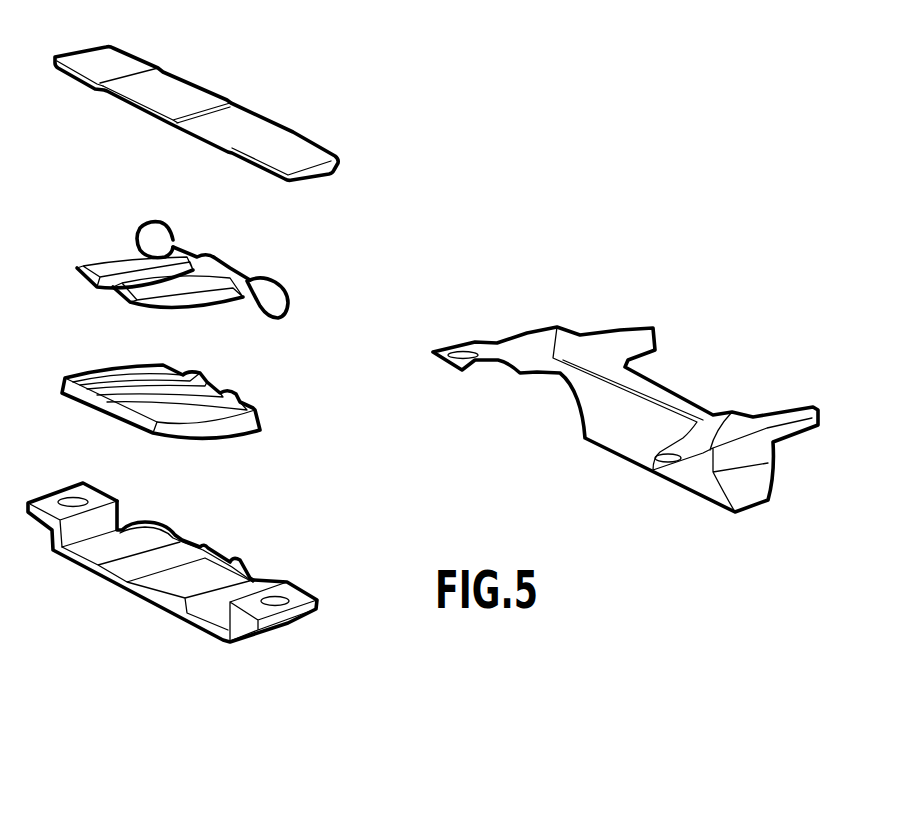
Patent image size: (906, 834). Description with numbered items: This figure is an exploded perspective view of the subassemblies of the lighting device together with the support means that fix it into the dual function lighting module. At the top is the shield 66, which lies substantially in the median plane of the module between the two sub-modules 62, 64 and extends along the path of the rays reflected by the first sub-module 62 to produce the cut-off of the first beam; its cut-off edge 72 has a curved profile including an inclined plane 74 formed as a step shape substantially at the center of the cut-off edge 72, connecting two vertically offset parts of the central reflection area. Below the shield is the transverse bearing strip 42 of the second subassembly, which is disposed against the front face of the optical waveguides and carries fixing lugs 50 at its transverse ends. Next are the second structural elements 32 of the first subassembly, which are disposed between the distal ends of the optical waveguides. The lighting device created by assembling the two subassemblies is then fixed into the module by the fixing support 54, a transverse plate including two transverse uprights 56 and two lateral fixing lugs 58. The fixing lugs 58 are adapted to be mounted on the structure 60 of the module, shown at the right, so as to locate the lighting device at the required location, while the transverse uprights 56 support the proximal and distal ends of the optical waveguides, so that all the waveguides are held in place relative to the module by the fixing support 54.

The shield 66 is at (196, 108).
The cut-off edge 72 is at (112, 98).
The inclined plane 74 is at (168, 125).
The sub-module 64 is at (246, 259).
The fixing lugs 50 is at (145, 233).
The bearing strip 42 is at (211, 254).
The sub-module 62 is at (207, 401).
The second structural elements 32 is at (100, 403).
The fixing support 54 is at (175, 592).
The transverse uprights 56 is at (220, 562).
The lateral fixing lugs 58 is at (43, 498).
The structure 60 is at (647, 493).